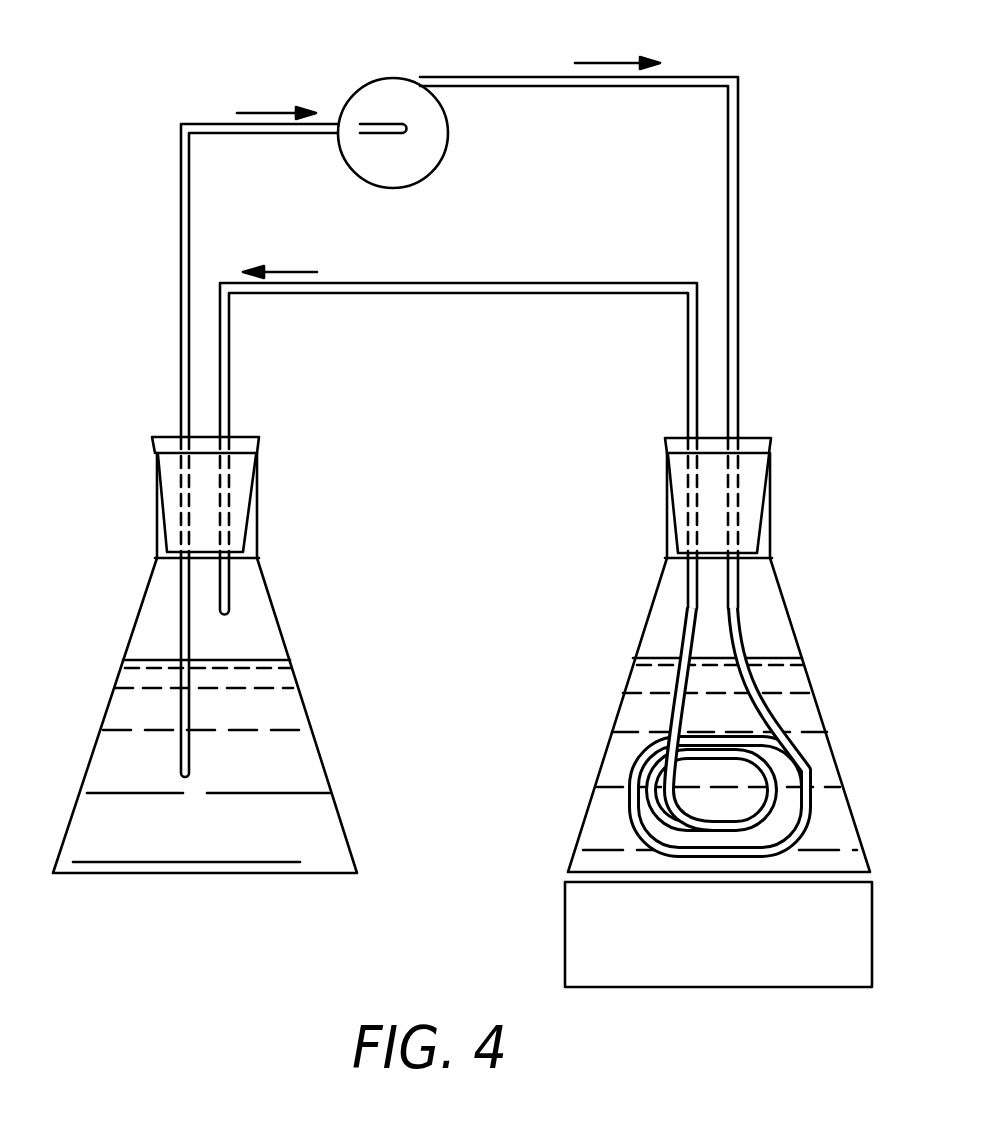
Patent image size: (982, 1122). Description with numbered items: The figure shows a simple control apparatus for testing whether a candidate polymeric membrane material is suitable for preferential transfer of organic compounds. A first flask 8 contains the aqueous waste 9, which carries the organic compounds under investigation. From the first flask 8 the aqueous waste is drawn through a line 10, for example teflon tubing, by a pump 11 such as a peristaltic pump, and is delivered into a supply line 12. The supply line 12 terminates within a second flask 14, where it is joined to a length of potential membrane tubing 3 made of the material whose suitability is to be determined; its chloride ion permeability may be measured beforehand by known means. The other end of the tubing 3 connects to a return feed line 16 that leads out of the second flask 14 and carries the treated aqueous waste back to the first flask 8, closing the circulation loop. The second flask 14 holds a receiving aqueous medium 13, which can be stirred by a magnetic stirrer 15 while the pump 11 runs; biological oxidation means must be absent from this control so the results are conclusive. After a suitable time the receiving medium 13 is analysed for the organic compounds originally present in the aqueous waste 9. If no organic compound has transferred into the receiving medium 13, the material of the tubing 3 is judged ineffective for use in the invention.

The potential membrane tubing 3 is at (740, 611).
The first flask 8 is at (268, 578).
The aqueous waste 9 is at (118, 698).
The line 10 is at (180, 325).
The pump 11 is at (372, 93).
The supply line 12 is at (455, 77).
The receiving aqueous medium 13 is at (640, 682).
The second flask 14 is at (668, 508).
The magnetic stirrer 15 is at (583, 912).
The return feed line 16 is at (507, 243).